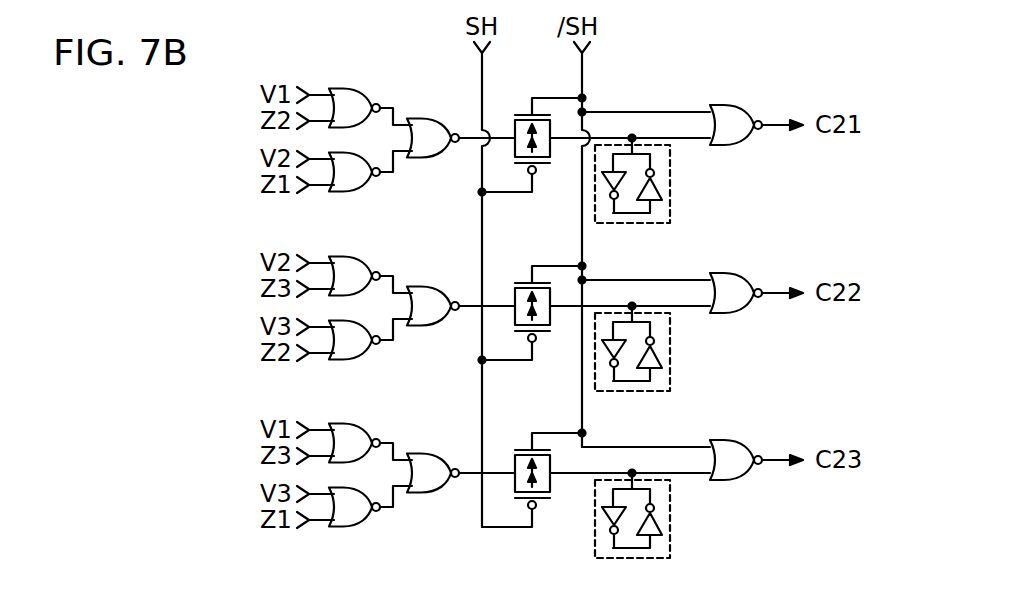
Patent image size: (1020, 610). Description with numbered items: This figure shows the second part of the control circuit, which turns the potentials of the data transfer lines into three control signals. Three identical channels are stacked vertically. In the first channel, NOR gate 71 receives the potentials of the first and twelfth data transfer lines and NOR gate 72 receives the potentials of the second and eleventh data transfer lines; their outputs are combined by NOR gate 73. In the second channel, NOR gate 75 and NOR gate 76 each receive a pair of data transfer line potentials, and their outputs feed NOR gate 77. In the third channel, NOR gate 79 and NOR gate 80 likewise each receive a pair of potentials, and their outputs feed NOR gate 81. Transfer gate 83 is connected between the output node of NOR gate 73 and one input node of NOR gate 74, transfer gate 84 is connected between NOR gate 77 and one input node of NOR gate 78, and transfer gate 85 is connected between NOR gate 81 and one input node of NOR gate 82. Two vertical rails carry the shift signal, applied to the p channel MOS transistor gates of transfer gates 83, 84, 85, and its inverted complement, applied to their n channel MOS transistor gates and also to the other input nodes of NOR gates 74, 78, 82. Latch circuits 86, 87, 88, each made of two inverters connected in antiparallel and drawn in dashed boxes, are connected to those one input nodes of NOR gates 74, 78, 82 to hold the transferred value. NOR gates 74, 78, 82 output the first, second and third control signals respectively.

The NOR gate 71 is at (346, 88).
The NOR gate 72 is at (345, 192).
The NOR gate 73 is at (425, 119).
The NOR gate 74 is at (727, 104).
The NOR gate 75 is at (370, 262).
The NOR gate 76 is at (370, 352).
The NOR gate 77 is at (461, 283).
The NOR gate 78 is at (756, 268).
The NOR gate 79 is at (370, 429).
The NOR gate 80 is at (370, 519).
The NOR gate 81 is at (461, 450).
The NOR gate 82 is at (756, 435).
The transfer gate 83 is at (543, 177).
The transfer gate 84 is at (532, 327).
The transfer gate 85 is at (534, 494).
The latch circuit 86 is at (672, 192).
The latch circuit 87 is at (667, 348).
The latch circuit 88 is at (668, 515).